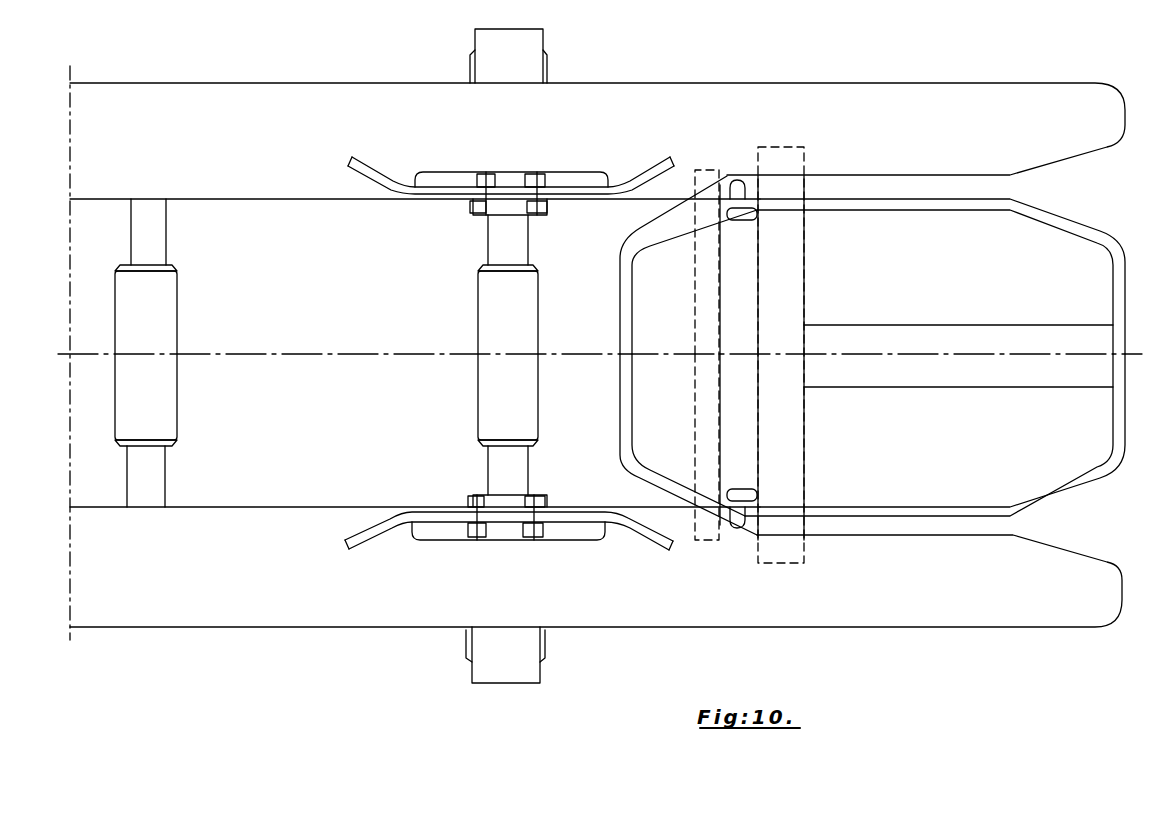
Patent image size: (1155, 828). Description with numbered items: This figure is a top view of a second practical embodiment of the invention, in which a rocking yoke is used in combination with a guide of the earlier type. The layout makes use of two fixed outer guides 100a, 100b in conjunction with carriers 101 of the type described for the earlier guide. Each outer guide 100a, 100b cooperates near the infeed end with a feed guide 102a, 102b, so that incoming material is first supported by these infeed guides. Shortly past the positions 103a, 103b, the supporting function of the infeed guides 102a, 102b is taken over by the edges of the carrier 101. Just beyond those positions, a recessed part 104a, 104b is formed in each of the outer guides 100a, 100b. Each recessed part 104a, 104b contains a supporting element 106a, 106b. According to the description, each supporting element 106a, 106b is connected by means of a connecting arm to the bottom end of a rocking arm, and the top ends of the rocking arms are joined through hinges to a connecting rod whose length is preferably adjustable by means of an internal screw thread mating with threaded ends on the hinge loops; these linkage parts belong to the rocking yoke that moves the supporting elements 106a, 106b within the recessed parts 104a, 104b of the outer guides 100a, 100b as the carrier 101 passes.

The fixed outer guide 100a is at (814, 612).
The fixed outer guide 100b is at (985, 94).
The carrier 101 is at (790, 183).
The feed guide 102a is at (986, 510).
The feed guide 102b is at (987, 205).
The position 103a is at (657, 503).
The position 103b is at (672, 202).
The recessed part 104a is at (437, 540).
The recessed part 104b is at (448, 172).
The supporting element 106a is at (572, 517).
The supporting element 106b is at (573, 193).